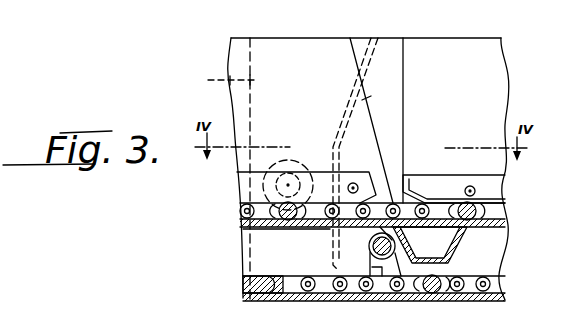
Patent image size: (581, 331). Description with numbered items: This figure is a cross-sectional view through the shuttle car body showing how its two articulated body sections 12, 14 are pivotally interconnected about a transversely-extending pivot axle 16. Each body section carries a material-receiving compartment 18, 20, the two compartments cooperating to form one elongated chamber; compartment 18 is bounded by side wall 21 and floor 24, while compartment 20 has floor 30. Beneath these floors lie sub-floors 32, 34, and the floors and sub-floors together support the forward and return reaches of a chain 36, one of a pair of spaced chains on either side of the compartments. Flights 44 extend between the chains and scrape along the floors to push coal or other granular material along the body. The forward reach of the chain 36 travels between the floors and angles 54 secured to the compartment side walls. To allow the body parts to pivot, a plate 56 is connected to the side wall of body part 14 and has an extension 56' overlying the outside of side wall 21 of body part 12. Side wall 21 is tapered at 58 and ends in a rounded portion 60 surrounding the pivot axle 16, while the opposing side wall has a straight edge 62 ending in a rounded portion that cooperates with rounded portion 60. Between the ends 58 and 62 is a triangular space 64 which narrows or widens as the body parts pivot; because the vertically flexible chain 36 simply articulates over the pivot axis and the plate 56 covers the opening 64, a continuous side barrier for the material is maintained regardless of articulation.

The body section 12 is at (238, 265).
The body section 14 is at (570, 95).
The pivot axle 16 is at (372, 248).
The material-receiving compartment 18 is at (320, 113).
The material-receiving compartment 20 is at (306, 46).
The side wall 21 is at (487, 46).
The floor 24 is at (313, 226).
The floor 30 is at (498, 236).
The sub-floor 32 is at (330, 297).
The sub-floor 34 is at (470, 302).
The chain 36 is at (490, 216).
The flight 44 is at (478, 251).
The angle 54 is at (291, 164).
The plate 56 is at (369, 138).
The plate extension 56' is at (216, 79).
The tapered end of side wall 58 is at (381, 150).
The rounded portion 60 is at (380, 294).
The straight edge 62 is at (407, 137).
The triangular space 64 is at (400, 96).